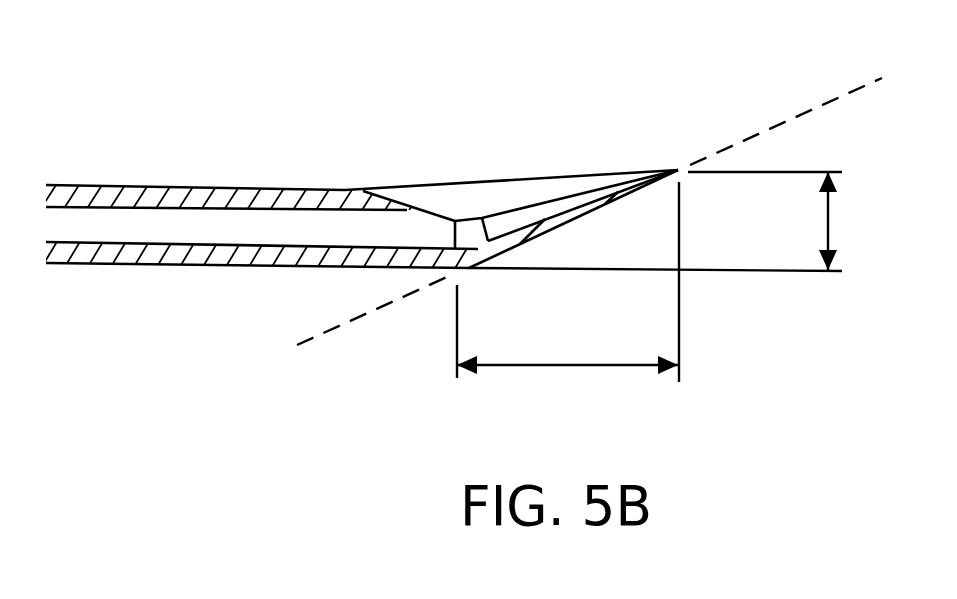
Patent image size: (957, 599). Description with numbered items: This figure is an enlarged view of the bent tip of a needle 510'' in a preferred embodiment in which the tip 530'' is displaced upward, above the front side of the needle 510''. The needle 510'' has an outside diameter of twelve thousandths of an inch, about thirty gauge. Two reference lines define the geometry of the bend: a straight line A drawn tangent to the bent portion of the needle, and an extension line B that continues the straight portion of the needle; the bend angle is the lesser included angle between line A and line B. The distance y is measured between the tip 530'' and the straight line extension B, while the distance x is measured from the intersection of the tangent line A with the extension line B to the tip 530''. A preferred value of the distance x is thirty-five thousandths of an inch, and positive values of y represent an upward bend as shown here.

The needle 510'' is at (267, 168).
The tip 530'' is at (513, 159).
The straight line tangent to the bent portion A is at (769, 132).
The extension line of the straight portion B is at (583, 272).
The distance X x is at (568, 282).
The distance Y y is at (842, 221).